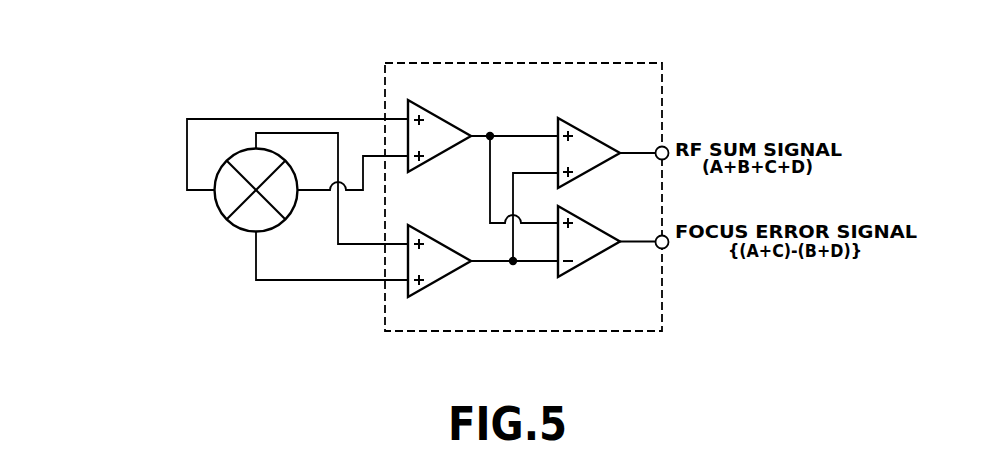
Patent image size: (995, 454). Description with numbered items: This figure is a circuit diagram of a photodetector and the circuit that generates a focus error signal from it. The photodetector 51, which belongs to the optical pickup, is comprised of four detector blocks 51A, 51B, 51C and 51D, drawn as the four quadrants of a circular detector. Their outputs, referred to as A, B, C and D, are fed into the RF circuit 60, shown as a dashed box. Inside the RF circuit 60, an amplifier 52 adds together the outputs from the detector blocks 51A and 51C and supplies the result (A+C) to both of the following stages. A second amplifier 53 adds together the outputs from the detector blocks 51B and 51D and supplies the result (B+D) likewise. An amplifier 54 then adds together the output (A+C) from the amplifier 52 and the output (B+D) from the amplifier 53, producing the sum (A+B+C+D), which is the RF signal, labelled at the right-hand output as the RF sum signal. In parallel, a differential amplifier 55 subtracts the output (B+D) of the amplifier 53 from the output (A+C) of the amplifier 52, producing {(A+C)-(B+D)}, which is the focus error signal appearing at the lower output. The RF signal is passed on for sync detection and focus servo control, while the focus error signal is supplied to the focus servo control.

The photodetector 51 is at (270, 294).
The detector block 51A is at (216, 194).
The detector block 51B is at (242, 159).
The detector block 51C is at (297, 167).
The detector block 51D is at (243, 223).
The amplifier 52 is at (451, 123).
The amplifier 53 is at (451, 274).
The amplifier 54 is at (587, 133).
The differential amplifier 55 is at (590, 263).
The RF circuit 60 is at (665, 87).